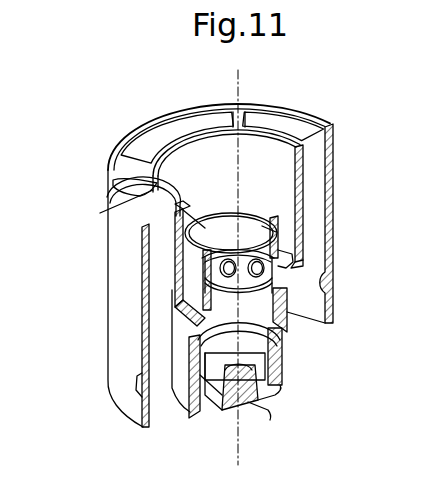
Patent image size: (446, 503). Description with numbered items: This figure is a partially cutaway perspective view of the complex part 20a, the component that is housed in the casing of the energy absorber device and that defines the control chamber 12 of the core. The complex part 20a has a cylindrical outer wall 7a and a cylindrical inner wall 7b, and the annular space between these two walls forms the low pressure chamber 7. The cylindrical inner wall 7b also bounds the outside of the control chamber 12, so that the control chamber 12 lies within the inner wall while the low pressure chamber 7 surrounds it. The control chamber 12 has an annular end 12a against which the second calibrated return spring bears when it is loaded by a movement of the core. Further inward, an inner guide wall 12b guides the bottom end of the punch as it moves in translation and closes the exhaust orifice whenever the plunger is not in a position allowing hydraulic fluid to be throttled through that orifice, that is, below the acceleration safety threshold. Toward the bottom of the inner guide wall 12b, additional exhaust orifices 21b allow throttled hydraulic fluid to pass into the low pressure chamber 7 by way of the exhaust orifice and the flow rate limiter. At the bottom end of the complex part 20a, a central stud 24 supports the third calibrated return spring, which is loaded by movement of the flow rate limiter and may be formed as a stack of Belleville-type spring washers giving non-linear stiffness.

The complex part 20a is at (107, 152).
The low pressure chamber 7 is at (178, 127).
The cylindrical outer wall 7a is at (334, 147).
The cylindrical inner wall 7b is at (324, 142).
The control chamber 12 is at (212, 188).
The annular end 12a is at (276, 232).
The inner guide wall 12b is at (120, 212).
The additional exhaust orifices 21b is at (262, 248).
The central stud 24 is at (254, 392).